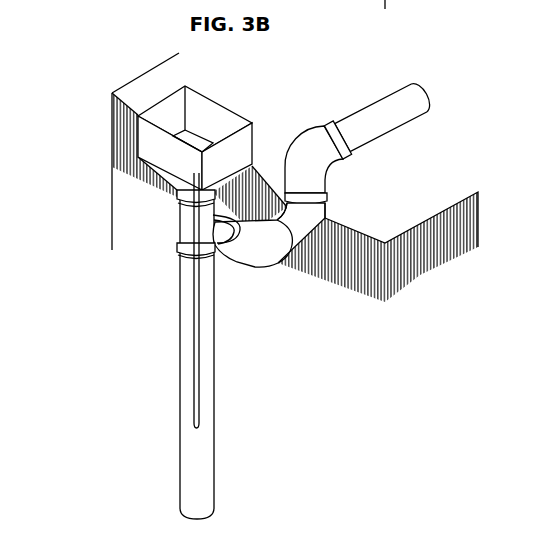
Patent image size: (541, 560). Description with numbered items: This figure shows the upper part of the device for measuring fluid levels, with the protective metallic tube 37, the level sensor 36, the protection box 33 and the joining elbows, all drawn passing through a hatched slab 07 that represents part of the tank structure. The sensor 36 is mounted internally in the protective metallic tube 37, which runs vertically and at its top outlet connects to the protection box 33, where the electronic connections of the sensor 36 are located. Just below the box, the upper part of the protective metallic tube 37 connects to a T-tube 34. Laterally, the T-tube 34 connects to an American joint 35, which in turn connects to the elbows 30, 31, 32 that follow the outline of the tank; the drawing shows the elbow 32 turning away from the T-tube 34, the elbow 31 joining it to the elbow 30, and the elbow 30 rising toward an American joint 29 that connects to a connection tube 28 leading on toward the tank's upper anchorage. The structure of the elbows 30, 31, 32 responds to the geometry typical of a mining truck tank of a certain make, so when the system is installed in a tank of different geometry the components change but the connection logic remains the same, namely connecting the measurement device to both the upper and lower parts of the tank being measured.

The slab 07 is at (373, 338).
The connection tube 28 is at (426, 103).
The American joint 29 is at (342, 130).
The elbow 30 is at (308, 167).
The elbow 31 is at (312, 222).
The elbow 32 is at (253, 263).
The protection box 33 is at (190, 156).
The T-tube 34 is at (200, 217).
The American joint 35 is at (198, 250).
The sensor 36 is at (196, 337).
The protective metallic tube 37 is at (197, 454).